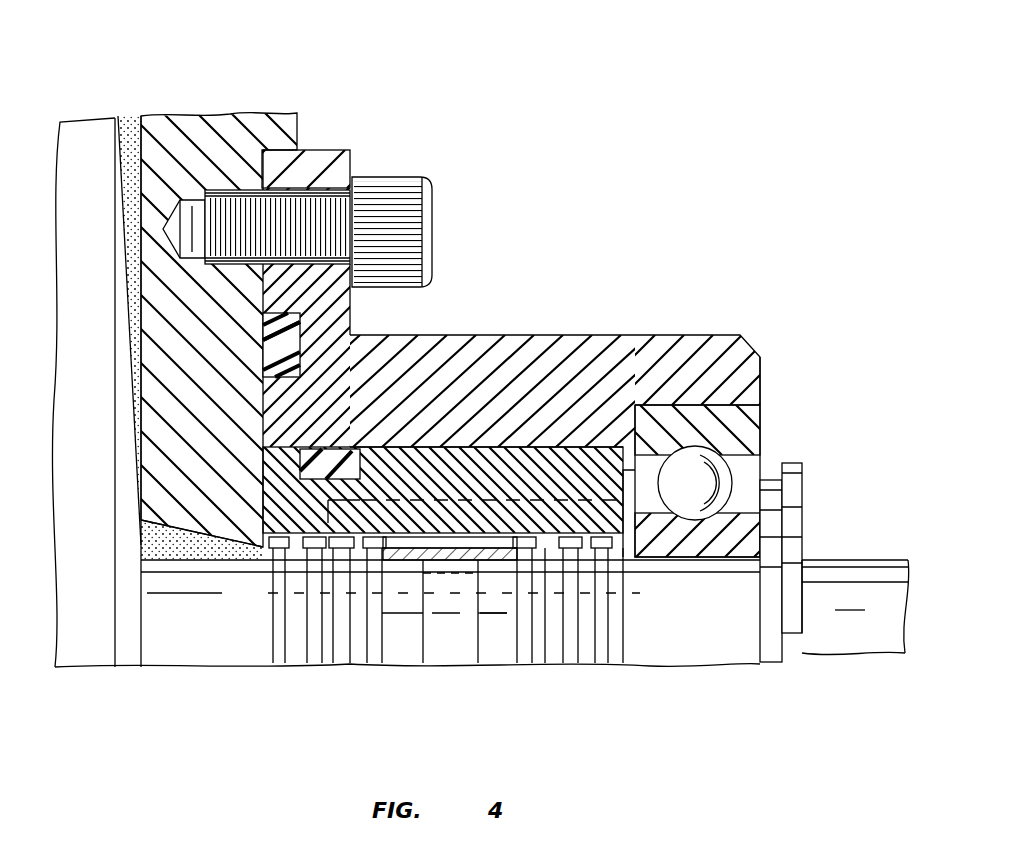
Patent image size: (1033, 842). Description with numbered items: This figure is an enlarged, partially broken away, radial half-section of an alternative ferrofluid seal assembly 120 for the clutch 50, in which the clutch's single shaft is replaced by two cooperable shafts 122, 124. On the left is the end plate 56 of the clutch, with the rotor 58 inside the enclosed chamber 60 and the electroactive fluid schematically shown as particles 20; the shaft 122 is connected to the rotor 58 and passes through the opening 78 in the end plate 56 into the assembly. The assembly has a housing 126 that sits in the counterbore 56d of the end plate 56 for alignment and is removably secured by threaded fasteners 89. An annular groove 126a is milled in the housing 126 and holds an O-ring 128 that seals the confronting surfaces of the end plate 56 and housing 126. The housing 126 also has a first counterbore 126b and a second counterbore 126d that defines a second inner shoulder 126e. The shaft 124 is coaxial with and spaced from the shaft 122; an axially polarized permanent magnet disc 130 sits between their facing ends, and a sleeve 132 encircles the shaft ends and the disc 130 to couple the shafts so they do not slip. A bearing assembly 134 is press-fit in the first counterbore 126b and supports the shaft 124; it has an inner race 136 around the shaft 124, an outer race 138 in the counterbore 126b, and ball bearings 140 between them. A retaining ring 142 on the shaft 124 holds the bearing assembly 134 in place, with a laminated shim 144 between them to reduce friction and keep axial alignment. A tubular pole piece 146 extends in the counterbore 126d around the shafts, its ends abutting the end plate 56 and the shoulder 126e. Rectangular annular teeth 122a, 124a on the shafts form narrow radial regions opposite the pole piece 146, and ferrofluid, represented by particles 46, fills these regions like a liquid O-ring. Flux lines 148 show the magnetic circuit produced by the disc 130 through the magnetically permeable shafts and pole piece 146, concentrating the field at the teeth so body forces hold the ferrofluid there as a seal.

The clutch 50 is at (146, 57).
The enclosed chamber 60 is at (128, 128).
The particles 20 is at (148, 118).
The end plate 56 is at (222, 114).
The rotor 58 is at (103, 236).
The counterbore 56d is at (300, 150).
The threaded fasteners 89 is at (434, 213).
The ferrofluid seal assembly 120 is at (606, 160).
The annular groove 126a is at (302, 347).
The pole piece 146 is at (450, 452).
The second counterbore 126d is at (508, 458).
The housing 126 is at (605, 350).
The second inner shoulder 126e is at (603, 447).
The first counterbore 126b is at (738, 418).
The outer race 138 is at (745, 437).
The bearing assembly 134 is at (772, 456).
The ball bearings 140 is at (713, 495).
The laminated shim 144 is at (800, 458).
The retaining ring 142 is at (805, 545).
The O-ring 128 is at (265, 337).
The opening 78 is at (160, 543).
The particles 46 is at (270, 540).
The inner race 136 is at (730, 537).
The shaft 122 is at (222, 647).
The annular teeth 122a is at (300, 550).
The sleeve 132 is at (410, 550).
The permanent magnet disc 130 is at (455, 640).
The annular teeth 124a is at (597, 545).
The shaft 124 is at (724, 643).
The flux lines 148 is at (502, 647).